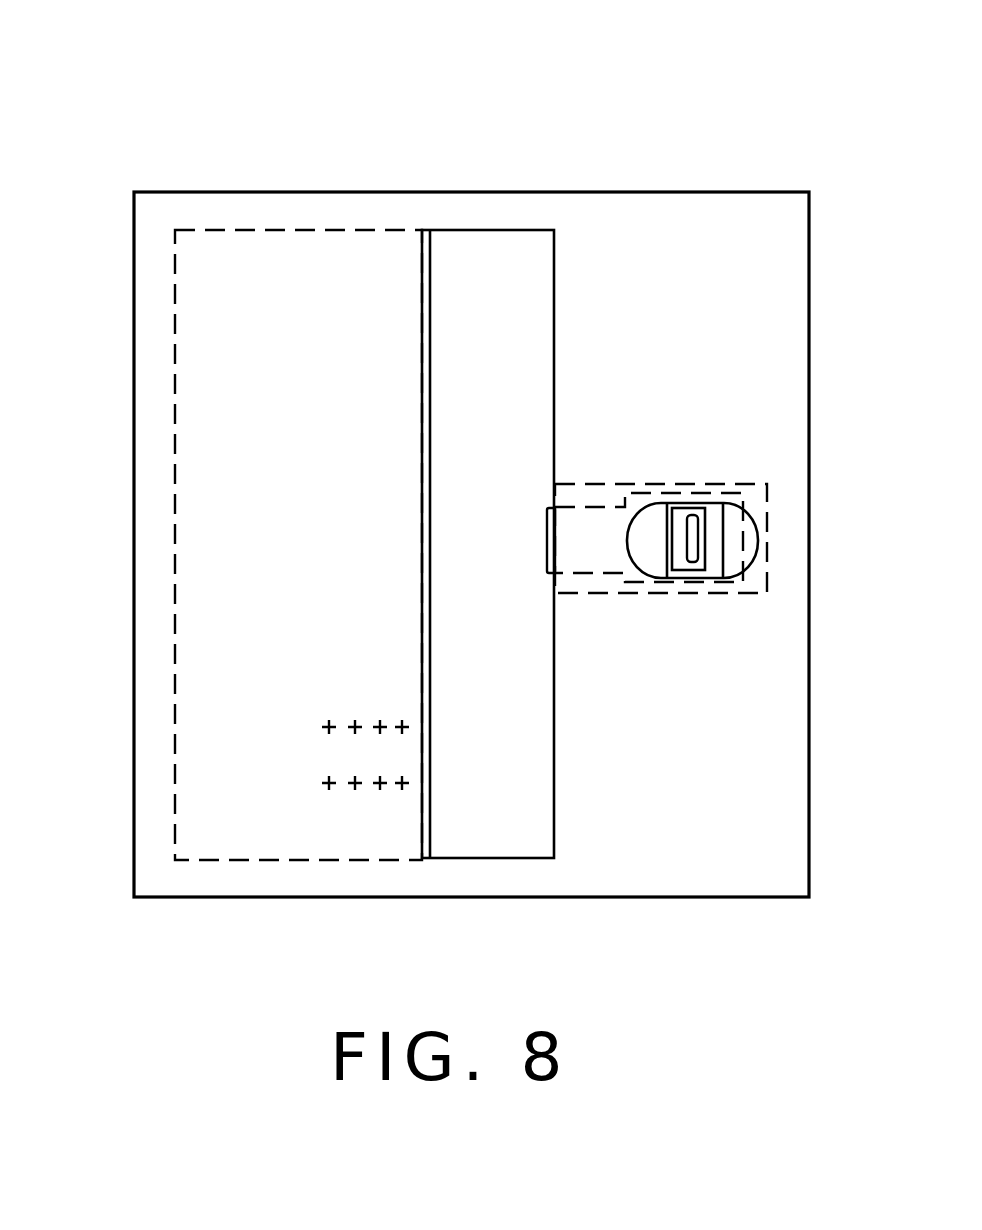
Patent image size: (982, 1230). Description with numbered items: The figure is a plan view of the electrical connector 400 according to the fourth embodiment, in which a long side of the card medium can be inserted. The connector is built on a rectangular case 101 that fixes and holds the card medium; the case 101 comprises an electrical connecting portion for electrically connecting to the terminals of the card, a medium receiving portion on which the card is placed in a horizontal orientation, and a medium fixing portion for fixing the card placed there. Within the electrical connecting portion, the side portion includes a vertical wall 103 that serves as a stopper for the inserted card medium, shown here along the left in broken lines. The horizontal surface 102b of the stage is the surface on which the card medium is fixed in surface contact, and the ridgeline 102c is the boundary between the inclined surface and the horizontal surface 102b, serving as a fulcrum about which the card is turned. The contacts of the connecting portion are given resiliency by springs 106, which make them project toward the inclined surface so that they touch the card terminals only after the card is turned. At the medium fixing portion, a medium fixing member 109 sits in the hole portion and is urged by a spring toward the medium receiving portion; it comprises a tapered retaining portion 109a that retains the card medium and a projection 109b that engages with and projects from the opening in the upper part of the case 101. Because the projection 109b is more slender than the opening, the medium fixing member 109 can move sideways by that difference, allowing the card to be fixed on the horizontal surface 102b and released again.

The electrical connector 400 is at (720, 50).
The case 101 is at (706, 208).
The vertical wall 103 is at (188, 655).
The horizontal surface 102b is at (540, 836).
The ridgeline 102c is at (432, 435).
The medium fixing member 109 is at (718, 503).
The tapered retaining portion 109a is at (545, 530).
The projection 109b is at (697, 578).
The springs 106 is at (318, 728).